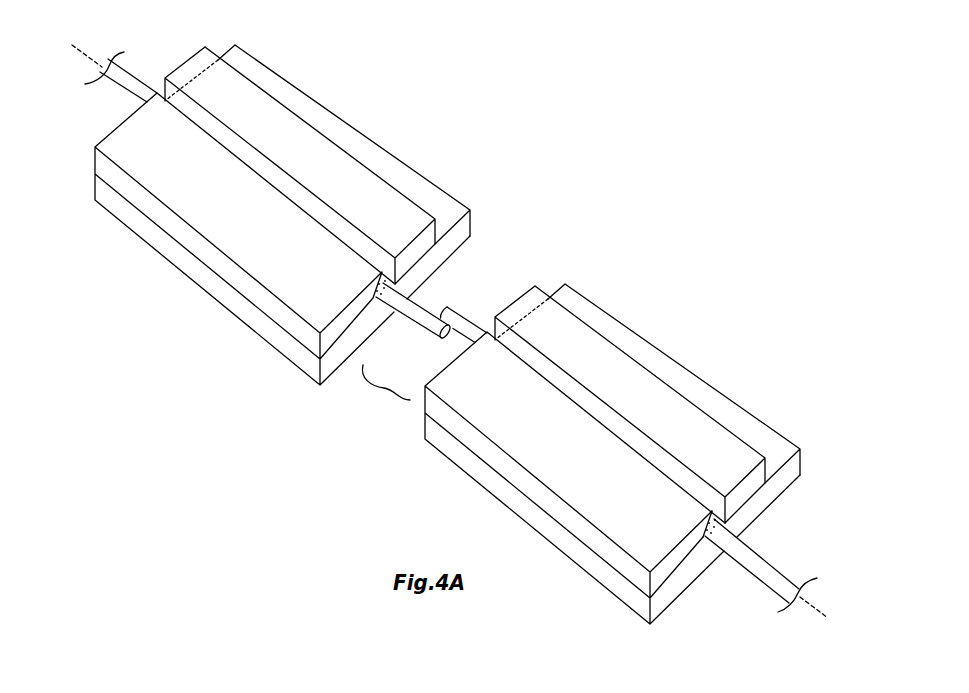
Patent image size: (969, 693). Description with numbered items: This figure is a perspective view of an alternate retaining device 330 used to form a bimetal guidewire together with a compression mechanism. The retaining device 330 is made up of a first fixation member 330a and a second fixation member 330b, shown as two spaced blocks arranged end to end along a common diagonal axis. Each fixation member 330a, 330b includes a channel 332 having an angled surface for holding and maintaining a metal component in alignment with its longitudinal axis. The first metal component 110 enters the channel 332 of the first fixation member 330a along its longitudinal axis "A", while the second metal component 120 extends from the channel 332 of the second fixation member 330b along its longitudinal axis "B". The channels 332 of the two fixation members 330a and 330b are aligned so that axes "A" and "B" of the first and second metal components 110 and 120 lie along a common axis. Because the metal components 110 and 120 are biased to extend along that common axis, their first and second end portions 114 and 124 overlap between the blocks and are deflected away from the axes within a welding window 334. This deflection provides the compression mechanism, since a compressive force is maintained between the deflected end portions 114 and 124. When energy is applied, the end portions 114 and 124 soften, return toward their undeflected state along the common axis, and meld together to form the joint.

The first metal component 110 is at (121, 68).
The first end portion 114 is at (421, 325).
The second end portion 124 is at (447, 309).
The second metal component 120 is at (768, 560).
The retaining device 330 is at (447, 356).
The first fixation member 330a is at (245, 210).
The second fixation member 330b is at (612, 475).
The channel 332 is at (707, 527).
The welding window 334 is at (386, 390).